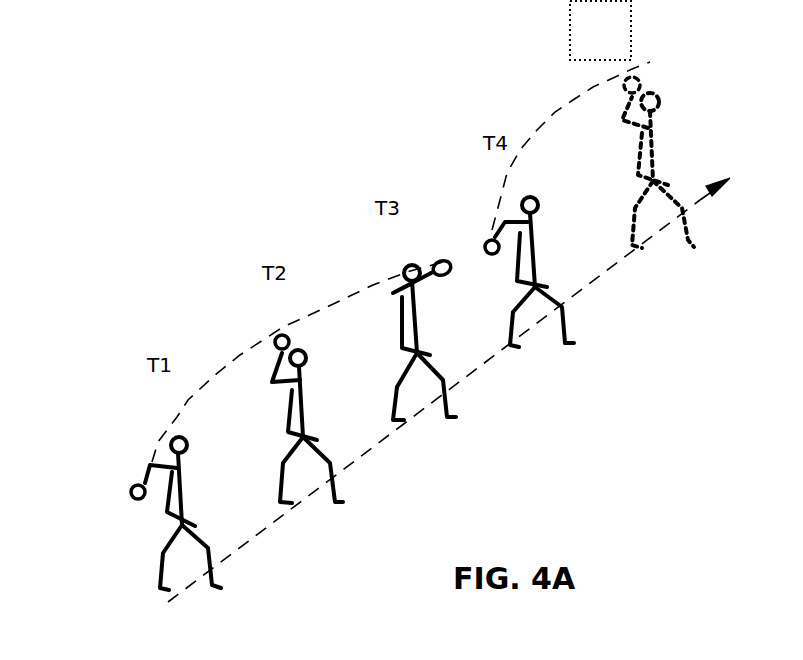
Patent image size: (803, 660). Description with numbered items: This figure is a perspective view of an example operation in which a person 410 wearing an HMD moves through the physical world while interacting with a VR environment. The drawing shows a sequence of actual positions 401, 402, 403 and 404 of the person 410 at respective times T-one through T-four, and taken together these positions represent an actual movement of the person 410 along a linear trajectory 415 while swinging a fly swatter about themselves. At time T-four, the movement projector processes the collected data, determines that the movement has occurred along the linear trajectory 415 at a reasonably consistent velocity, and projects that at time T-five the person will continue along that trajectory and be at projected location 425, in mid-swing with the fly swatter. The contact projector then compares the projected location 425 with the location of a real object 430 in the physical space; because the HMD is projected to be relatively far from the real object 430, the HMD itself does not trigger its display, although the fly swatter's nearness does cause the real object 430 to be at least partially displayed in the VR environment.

The actual position 401 is at (225, 639).
The actual position 402 is at (342, 549).
The actual position 403 is at (450, 466).
The actual position 404 is at (568, 390).
The person 410 is at (143, 532).
The linear trajectory 415 is at (342, 470).
The projected location 425 is at (708, 298).
The real object 430 is at (570, 22).